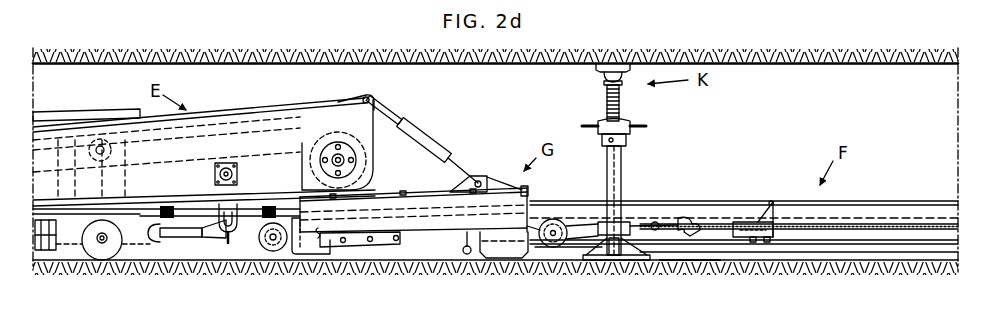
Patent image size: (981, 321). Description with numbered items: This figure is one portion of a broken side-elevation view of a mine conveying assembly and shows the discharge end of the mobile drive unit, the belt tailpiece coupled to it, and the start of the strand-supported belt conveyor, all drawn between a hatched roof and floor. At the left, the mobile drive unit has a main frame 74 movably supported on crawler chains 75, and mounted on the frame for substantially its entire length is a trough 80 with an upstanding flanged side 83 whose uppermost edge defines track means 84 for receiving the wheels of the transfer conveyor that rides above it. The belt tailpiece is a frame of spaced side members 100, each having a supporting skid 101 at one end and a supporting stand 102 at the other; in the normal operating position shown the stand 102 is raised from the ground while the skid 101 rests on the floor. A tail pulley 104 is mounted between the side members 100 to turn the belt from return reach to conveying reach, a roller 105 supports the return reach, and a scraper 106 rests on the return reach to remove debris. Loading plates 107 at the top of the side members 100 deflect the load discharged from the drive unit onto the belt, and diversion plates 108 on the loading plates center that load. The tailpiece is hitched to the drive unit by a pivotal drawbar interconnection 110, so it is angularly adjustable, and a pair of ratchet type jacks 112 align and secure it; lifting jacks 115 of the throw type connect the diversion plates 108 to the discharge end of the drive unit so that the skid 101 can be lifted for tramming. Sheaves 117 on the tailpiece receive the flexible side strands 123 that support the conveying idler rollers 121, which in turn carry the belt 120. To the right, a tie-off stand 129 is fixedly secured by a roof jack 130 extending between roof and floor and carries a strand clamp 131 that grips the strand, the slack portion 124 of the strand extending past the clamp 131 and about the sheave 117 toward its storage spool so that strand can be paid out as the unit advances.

The main frame 74 is at (34, 223).
The crawler chains 75 is at (108, 258).
The trough 80 is at (302, 117).
The upstanding flanged side 83 is at (244, 110).
The track means 84 is at (201, 112).
The side members 100 is at (437, 220).
The supporting skid 101 is at (510, 257).
The supporting stand 102 is at (314, 255).
The tail pulley 104 is at (265, 250).
The roller 105 is at (467, 254).
The scraper 106 is at (375, 245).
The loading plates 107 is at (523, 186).
The diversion plates 108 is at (486, 174).
The pivotal drawbar interconnection 110 is at (177, 238).
The ratchet type jacks 112 is at (223, 233).
The lifting jacks 115 is at (437, 147).
The sheaves 117 is at (556, 247).
The belt 120 is at (852, 210).
The conveying idler rollers 121 is at (757, 221).
The flexible side strands 123 is at (889, 226).
The slack portion 124 is at (690, 262).
The tie-off stands 129 is at (622, 168).
The roof jacks 130 is at (622, 101).
The strand clamp 131 is at (689, 221).